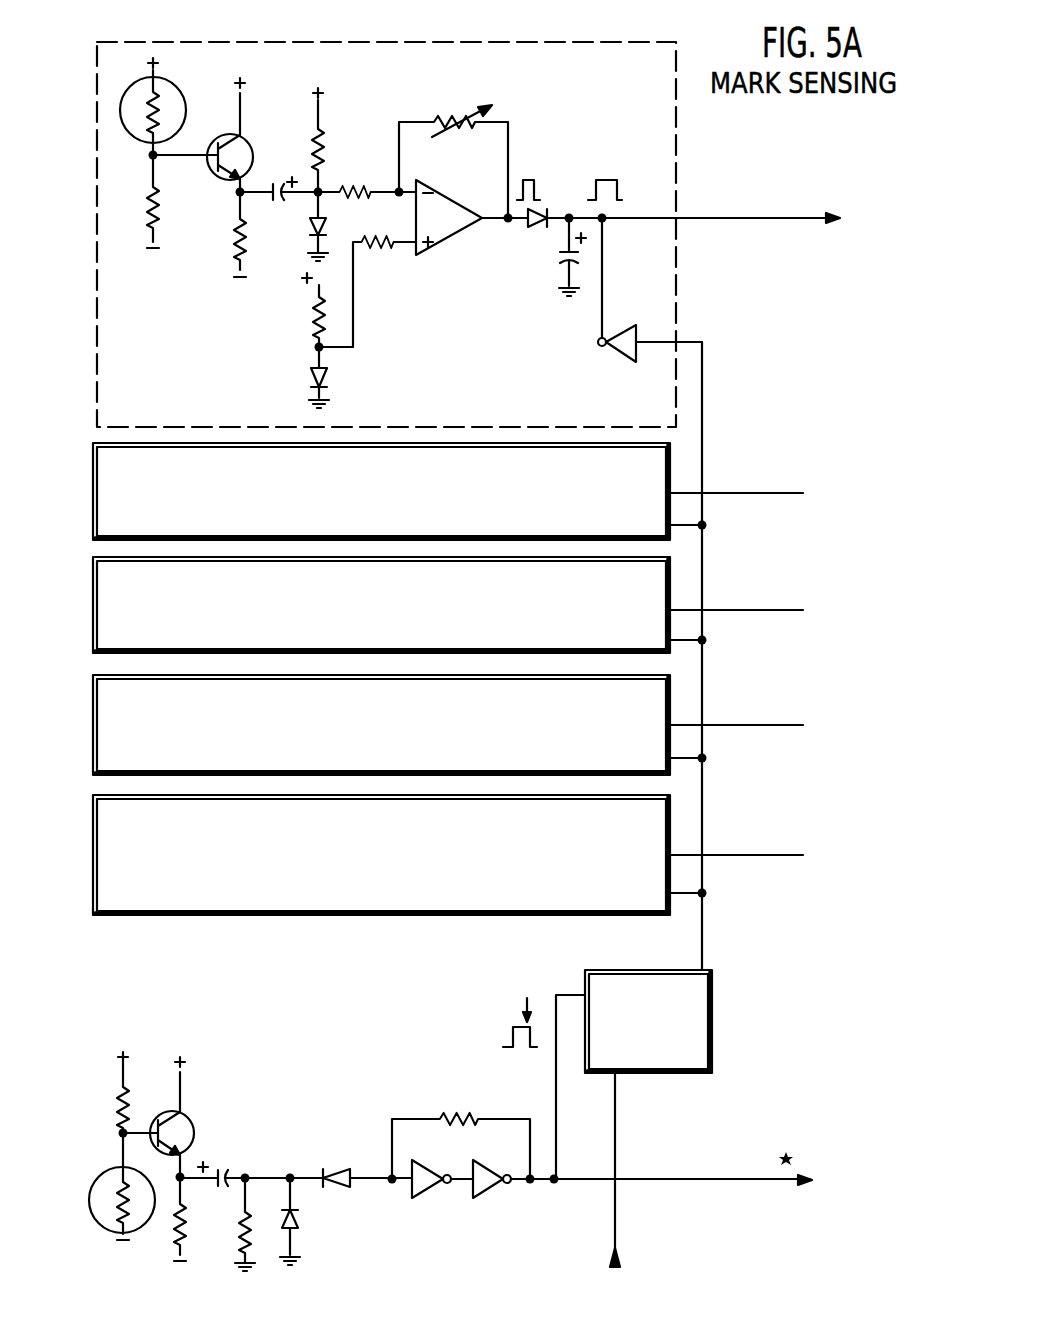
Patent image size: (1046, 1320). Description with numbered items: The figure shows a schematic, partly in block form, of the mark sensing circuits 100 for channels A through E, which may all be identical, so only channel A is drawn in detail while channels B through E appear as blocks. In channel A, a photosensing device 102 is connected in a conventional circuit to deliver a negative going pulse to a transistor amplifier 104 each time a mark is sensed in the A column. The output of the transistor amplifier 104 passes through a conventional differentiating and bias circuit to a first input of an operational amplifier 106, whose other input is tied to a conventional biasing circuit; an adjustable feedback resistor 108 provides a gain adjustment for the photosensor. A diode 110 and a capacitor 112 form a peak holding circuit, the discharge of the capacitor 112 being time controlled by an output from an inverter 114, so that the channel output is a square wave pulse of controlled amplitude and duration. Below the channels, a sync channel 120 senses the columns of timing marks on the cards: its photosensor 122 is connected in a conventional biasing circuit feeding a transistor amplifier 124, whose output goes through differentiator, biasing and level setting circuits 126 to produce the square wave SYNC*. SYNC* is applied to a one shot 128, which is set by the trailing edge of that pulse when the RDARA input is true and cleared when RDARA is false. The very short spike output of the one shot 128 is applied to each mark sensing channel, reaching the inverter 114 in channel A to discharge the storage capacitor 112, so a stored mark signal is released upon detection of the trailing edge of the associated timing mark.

The mark sensing circuits 100 is at (809, 126).
The photosensing device 102 is at (170, 72).
The transistor amplifier 104 is at (232, 124).
The operational amplifier 106 is at (469, 202).
The adjustable feedback resistor 108 is at (449, 115).
The diode 110 is at (542, 206).
The capacitor 112 is at (560, 262).
The inverter 114 is at (612, 328).
The sync channel 120 is at (542, 1256).
The photosensor 122 is at (98, 1175).
The transistor amplifier 124 is at (189, 1118).
The differentiator, biasing and level setting circuits 126 is at (290, 1140).
The one shot 128 is at (606, 970).